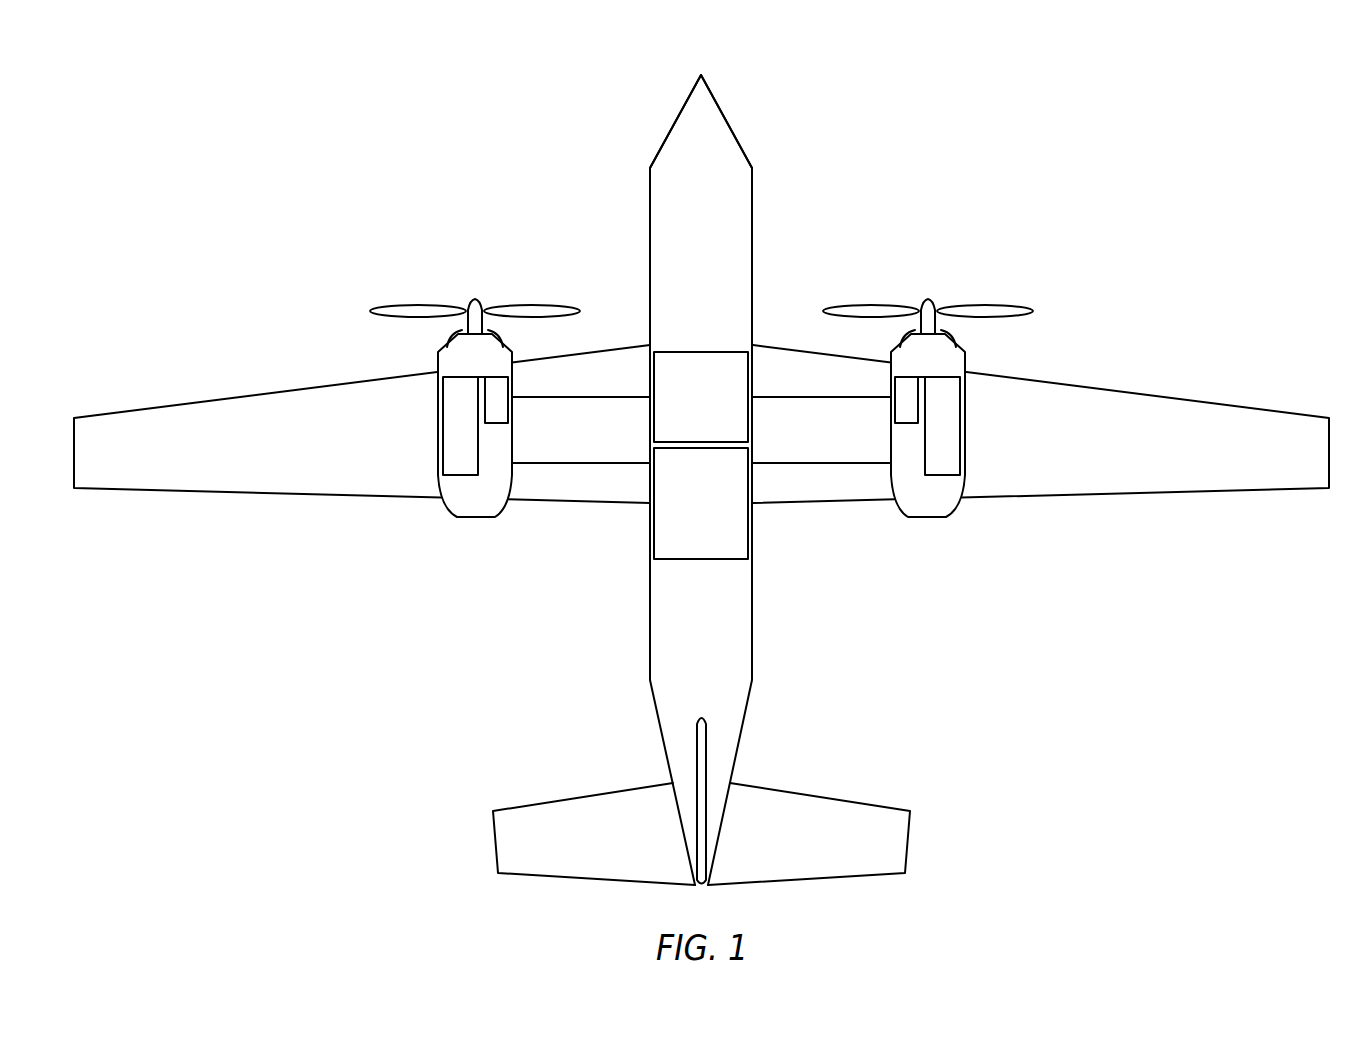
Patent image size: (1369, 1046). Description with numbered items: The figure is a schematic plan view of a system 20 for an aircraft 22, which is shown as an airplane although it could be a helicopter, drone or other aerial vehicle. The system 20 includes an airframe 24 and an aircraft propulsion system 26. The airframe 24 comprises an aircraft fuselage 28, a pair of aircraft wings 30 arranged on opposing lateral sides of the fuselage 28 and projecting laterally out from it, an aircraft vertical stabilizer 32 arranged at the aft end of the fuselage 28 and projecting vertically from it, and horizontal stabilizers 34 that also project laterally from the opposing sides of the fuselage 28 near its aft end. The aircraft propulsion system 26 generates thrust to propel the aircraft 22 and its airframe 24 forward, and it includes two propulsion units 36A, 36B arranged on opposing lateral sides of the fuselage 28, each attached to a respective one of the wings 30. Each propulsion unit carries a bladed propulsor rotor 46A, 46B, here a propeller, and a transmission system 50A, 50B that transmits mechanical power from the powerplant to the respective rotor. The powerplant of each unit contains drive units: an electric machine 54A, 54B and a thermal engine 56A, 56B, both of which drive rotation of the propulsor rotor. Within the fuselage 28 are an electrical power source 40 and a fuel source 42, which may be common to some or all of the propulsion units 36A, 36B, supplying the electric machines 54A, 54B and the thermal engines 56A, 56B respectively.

The system 20 is at (1036, 94).
The aircraft 22 is at (990, 130).
The airframe 24 is at (733, 107).
The aircraft propulsion system 26 is at (971, 264).
The aircraft fuselage 28 is at (753, 192).
The aircraft wings 30 is at (216, 398).
The aircraft vertical stabilizer 32 is at (707, 757).
The aircraft horizontal stabilizers 34 is at (557, 797).
The propulsion unit 36A is at (443, 402).
The propulsion unit 36B is at (959, 373).
The electrical power source 40 is at (688, 410).
The fuel source 42 is at (688, 514).
The bladed propulsor rotor 46A is at (393, 305).
The bladed propulsor rotor 46B is at (1010, 304).
The transmission system 50A is at (450, 335).
The transmission system 50B is at (953, 335).
The electric machine 54A is at (509, 388).
The electric machine 54B is at (893, 388).
The thermal engine 56A is at (437, 431).
The thermal engine 56B is at (966, 431).